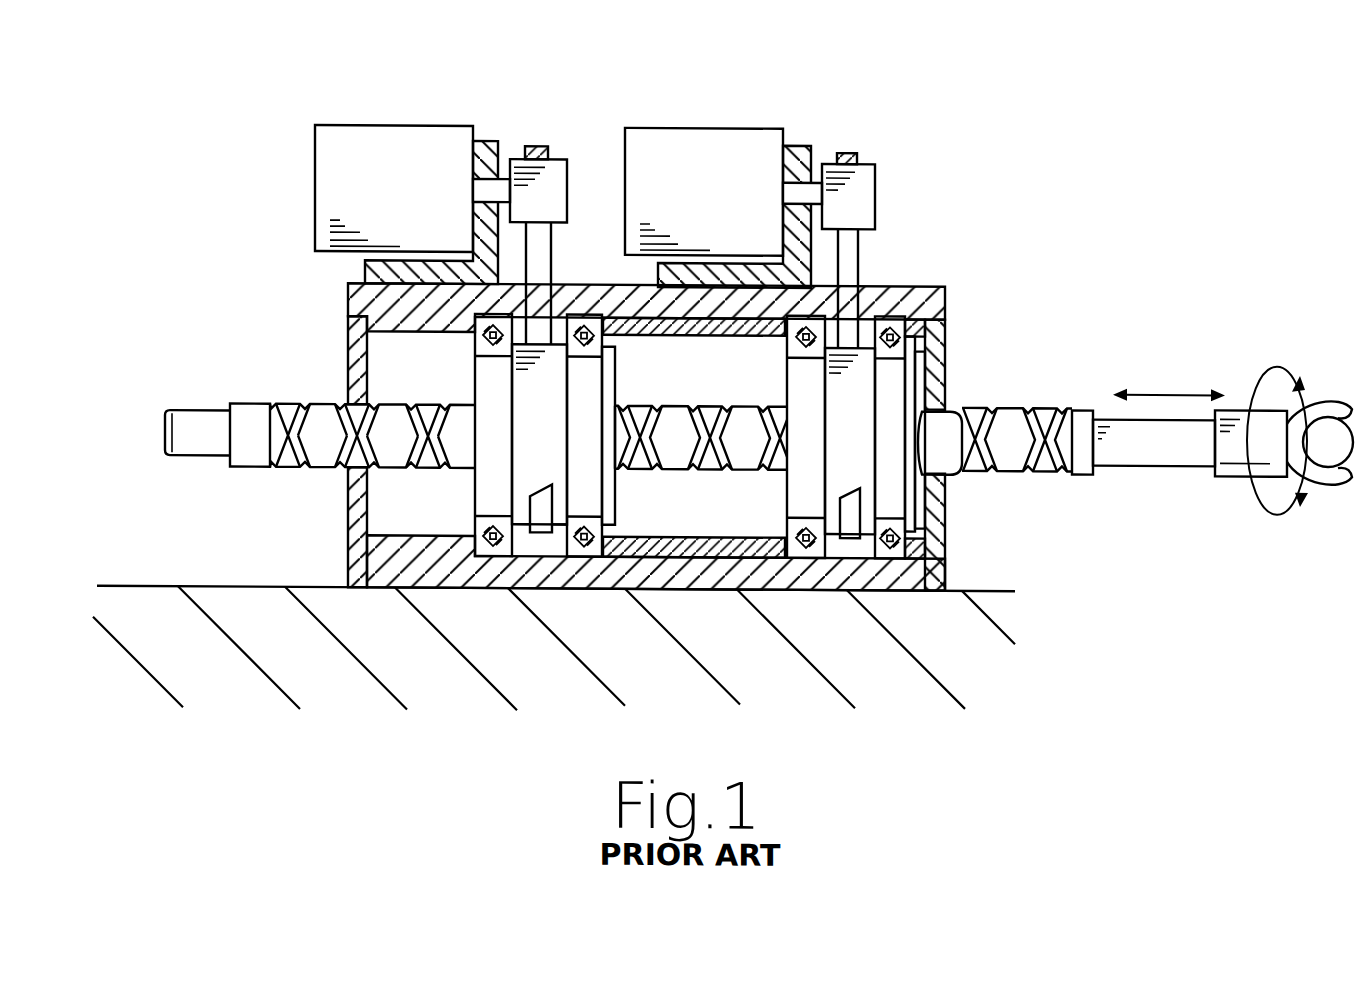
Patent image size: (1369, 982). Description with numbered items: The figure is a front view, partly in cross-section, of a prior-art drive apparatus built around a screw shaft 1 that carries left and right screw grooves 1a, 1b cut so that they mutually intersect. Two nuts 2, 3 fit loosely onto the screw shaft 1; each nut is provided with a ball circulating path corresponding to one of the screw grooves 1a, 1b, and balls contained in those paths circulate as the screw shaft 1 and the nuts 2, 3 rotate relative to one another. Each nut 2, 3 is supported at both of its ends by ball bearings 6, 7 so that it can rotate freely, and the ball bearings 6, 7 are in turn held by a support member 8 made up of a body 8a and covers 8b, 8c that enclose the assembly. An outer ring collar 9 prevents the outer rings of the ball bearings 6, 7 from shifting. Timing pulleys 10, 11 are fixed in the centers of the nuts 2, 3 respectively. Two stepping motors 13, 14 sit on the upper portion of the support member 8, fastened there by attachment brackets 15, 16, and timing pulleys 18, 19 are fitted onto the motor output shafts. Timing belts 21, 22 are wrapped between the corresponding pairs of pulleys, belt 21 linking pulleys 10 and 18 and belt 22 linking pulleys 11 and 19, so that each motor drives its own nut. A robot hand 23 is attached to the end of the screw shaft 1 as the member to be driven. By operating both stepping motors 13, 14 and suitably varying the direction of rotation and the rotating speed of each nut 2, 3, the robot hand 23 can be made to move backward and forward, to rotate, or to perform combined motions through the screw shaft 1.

The screw shaft 1 is at (667, 401).
The left screw groove 1a is at (272, 418).
The right screw groove 1b is at (272, 460).
The nut 2 is at (895, 382).
The nut 3 is at (590, 488).
The ball bearing 6 is at (800, 557).
The ball bearing 7 is at (506, 557).
The support member 8 is at (660, 377).
The body 8a is at (380, 315).
The cover 8b is at (365, 357).
The cover 8c is at (948, 390).
The outer ring collar 9 is at (670, 545).
The timing pulley 10 is at (858, 467).
The timing pulley 11 is at (532, 470).
The stepping motor 13 is at (726, 128).
The stepping motor 14 is at (373, 135).
The attachment bracket 15 is at (800, 145).
The attachment bracket 16 is at (487, 142).
The timing pulley 18 is at (868, 190).
The timing pulley 19 is at (558, 165).
The timing belt 21 is at (853, 263).
The timing belt 22 is at (548, 258).
The robot hand 23 is at (1335, 398).